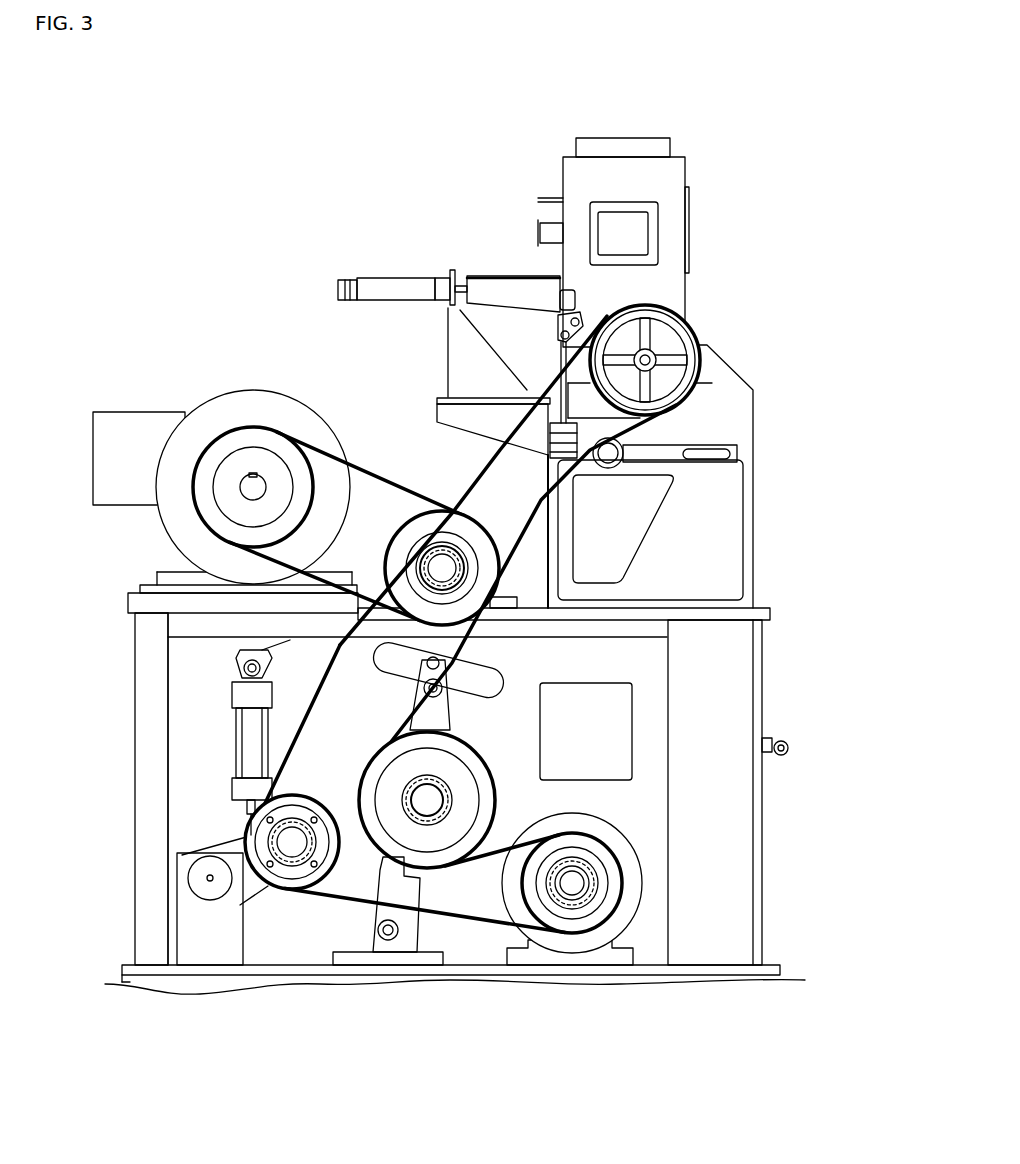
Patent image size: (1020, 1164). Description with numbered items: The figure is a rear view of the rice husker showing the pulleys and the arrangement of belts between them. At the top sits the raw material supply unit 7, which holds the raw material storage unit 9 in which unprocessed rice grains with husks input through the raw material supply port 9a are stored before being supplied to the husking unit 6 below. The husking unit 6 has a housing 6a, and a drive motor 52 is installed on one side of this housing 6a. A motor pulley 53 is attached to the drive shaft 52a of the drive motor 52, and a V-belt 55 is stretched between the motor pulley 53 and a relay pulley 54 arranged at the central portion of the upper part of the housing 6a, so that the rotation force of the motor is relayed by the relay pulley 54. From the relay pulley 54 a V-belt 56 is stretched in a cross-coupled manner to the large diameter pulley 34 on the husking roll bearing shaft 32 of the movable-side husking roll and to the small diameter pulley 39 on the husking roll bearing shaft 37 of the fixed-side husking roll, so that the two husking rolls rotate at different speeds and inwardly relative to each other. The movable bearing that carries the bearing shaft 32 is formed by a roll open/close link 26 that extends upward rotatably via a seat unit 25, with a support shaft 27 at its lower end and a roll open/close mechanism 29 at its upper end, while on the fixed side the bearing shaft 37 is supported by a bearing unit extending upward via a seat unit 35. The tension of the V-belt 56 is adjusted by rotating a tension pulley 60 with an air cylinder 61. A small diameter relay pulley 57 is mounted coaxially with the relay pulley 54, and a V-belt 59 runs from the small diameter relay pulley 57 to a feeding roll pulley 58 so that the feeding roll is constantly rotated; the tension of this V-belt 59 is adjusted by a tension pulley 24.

The husking unit 6 is at (133, 690).
The housing 6a is at (157, 792).
The raw material supply unit 7 is at (525, 253).
The raw material storage unit 9 is at (680, 172).
The raw material supply port 9a is at (612, 137).
The tension pulley 24 is at (608, 468).
The seat unit 25 is at (390, 957).
The roll open/close link 26 is at (398, 890).
The support shaft 27 is at (382, 934).
The roll open/close mechanism 29 is at (470, 672).
The husking roll bearing shaft 32 is at (427, 800).
The large diameter pulley 34 is at (495, 790).
The seat unit 35 is at (568, 958).
The husking roll bearing shaft 37 is at (577, 886).
The small diameter pulley 39 is at (620, 878).
The drive motor 52 is at (235, 412).
The drive shaft 52a is at (262, 486).
The motor pulley 53 is at (207, 507).
The relay pulley 54 is at (422, 512).
The V-belt 55 is at (337, 482).
The V-belt 56 is at (314, 702).
The small diameter relay pulley 57 is at (467, 537).
The feeding roll pulley 58 is at (688, 331).
The V-belt 59 is at (471, 515).
The tension pulley 60 is at (292, 880).
The air cylinder 61 is at (252, 750).